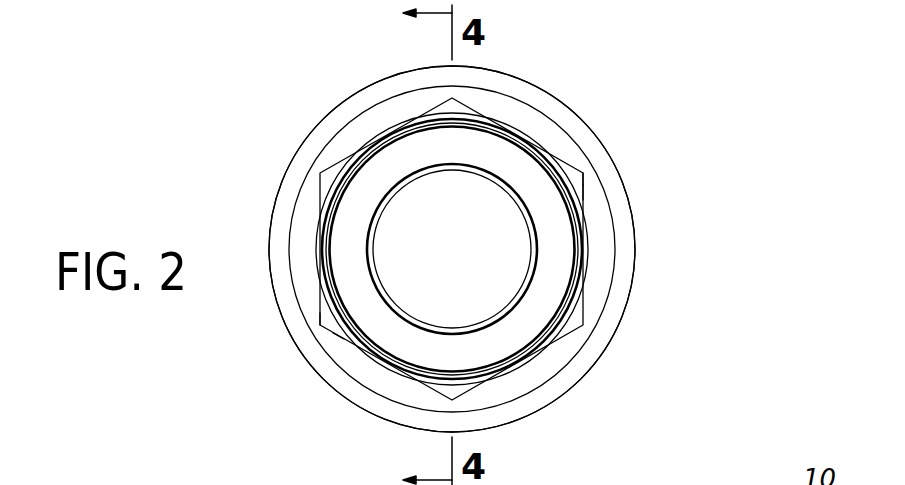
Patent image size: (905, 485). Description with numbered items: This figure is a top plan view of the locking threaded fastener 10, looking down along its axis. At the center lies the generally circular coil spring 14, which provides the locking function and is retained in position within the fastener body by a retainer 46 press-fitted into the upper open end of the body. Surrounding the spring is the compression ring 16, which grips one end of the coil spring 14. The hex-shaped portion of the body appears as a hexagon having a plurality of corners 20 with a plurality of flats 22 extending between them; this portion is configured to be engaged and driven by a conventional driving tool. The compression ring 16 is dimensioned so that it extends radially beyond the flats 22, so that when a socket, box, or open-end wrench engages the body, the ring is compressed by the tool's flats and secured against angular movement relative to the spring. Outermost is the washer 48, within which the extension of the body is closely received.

The locking threaded fastener 10 is at (621, 67).
The coil spring 14 is at (494, 199).
The compression ring 16 is at (602, 253).
The corners 20 is at (583, 172).
The flats 22 is at (583, 190).
The retainer 46 is at (383, 163).
The washer 48 is at (592, 381).